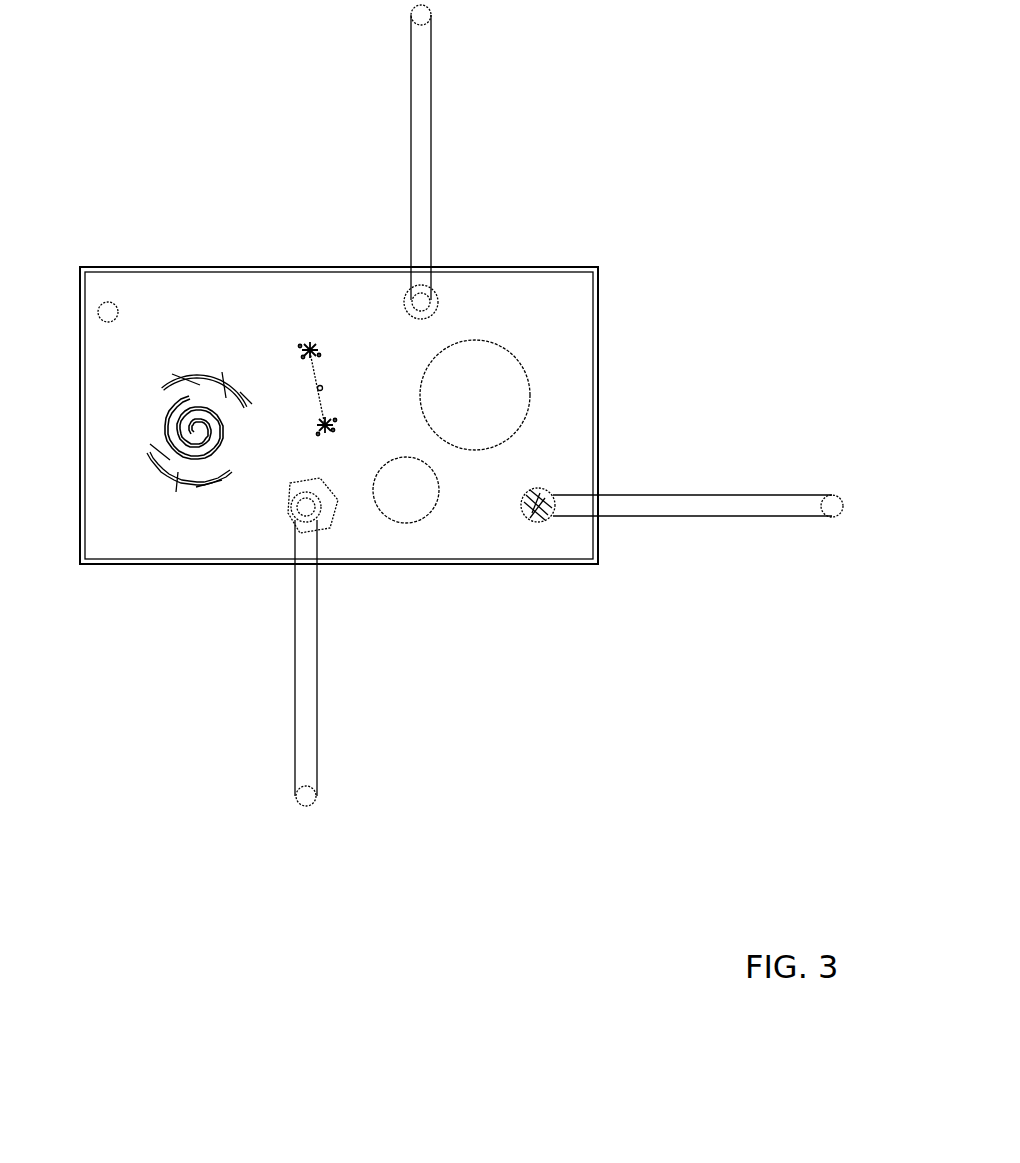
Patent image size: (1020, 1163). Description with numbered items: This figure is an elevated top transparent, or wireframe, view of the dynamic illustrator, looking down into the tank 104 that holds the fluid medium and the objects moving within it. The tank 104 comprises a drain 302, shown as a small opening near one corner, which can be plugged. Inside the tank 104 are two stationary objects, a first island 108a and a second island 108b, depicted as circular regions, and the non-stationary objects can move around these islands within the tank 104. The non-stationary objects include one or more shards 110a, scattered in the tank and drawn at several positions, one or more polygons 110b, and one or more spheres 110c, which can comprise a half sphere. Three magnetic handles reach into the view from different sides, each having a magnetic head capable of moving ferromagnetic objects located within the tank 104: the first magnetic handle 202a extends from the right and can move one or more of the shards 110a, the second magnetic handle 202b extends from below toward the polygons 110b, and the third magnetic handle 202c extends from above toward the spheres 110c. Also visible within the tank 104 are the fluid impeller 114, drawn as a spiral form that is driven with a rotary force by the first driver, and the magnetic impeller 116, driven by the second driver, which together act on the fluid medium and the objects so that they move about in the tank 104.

The tank 104 is at (597, 563).
The drain 302 is at (100, 302).
The third magnetic handle 202c is at (430, 90).
The spheres 110c is at (435, 300).
The second island 108b is at (533, 410).
The first island 108a is at (410, 522).
The polygons 110b is at (288, 518).
The second magnetic handle 202b is at (303, 725).
The first magnetic handle 202a is at (731, 507).
The shards 110a is at (305, 335).
The magnetic impeller 116 is at (322, 385).
The fluid impeller 114 is at (205, 364).